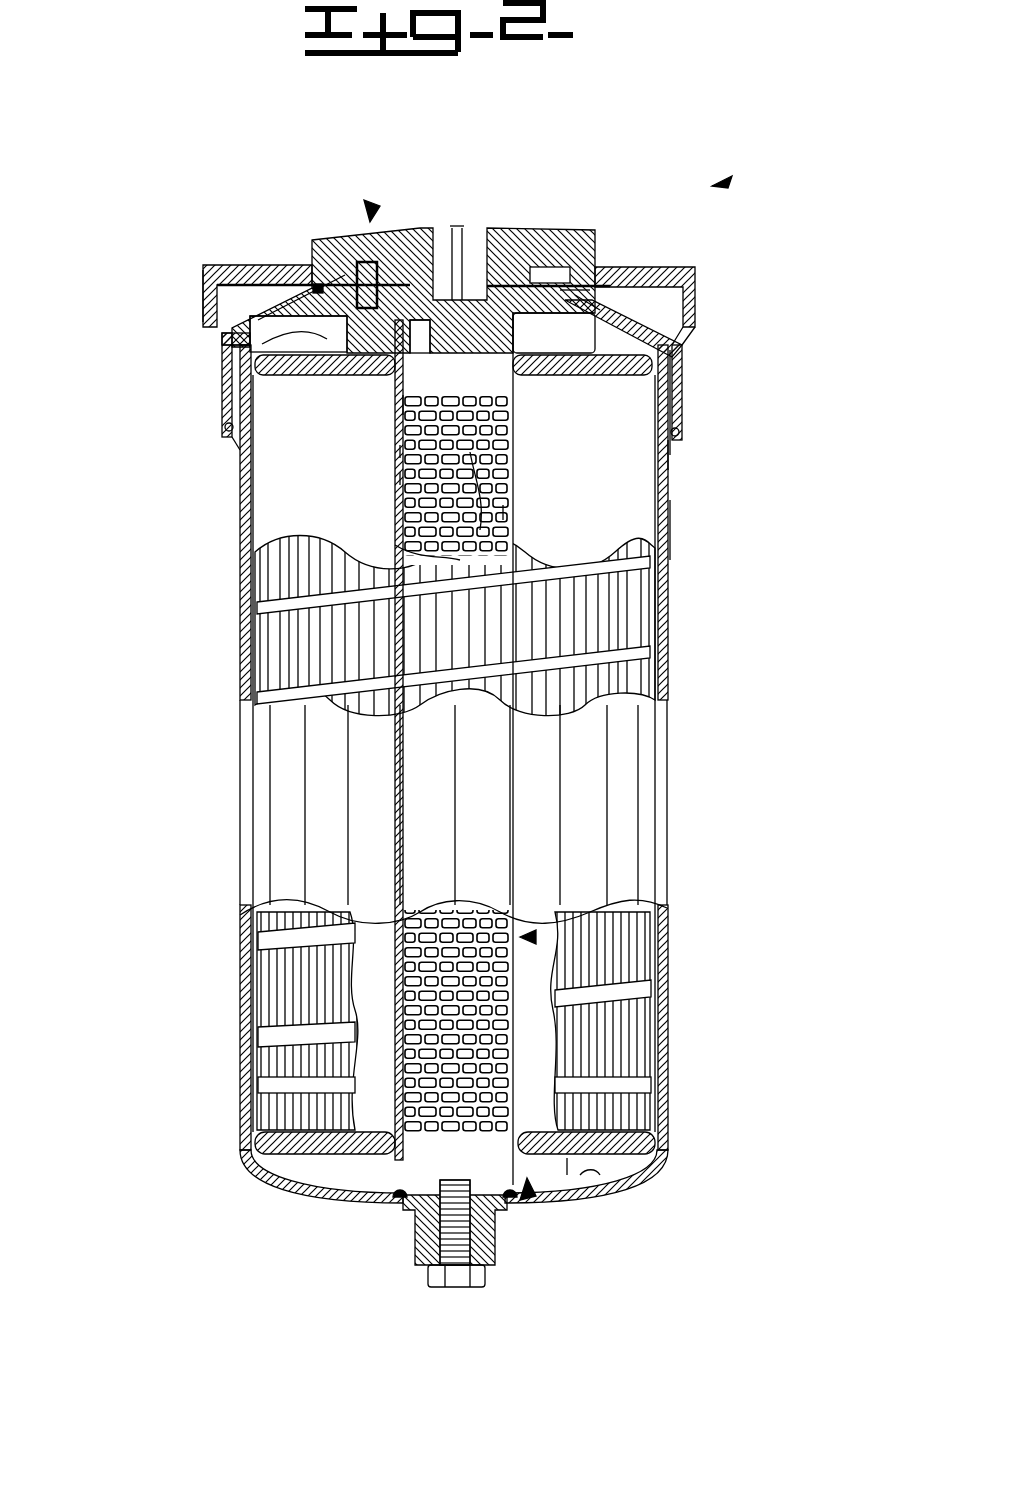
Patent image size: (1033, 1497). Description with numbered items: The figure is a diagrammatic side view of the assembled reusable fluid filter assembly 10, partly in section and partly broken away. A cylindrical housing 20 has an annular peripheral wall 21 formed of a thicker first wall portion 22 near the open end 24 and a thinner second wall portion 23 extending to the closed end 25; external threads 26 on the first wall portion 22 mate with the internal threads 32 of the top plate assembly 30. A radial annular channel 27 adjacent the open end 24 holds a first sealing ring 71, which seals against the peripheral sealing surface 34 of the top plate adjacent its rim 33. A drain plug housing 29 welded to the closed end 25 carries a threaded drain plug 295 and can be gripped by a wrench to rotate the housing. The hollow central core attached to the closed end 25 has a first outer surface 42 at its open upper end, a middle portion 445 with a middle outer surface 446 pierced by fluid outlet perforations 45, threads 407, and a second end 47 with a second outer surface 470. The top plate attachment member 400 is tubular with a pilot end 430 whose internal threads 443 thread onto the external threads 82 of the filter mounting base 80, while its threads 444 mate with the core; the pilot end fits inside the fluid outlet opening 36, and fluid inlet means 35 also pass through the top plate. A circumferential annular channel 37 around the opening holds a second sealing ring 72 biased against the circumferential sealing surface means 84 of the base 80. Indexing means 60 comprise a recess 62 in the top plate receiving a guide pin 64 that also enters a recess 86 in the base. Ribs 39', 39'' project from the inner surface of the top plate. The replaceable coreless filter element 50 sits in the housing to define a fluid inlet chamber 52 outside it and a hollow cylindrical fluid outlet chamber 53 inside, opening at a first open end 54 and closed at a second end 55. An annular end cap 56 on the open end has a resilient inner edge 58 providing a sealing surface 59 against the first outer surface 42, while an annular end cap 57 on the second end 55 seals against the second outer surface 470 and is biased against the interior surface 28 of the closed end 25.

The reusable fluid filter assembly 10 is at (720, 182).
The cylindrical housing 20 is at (530, 845).
The annular peripheral wall 21 is at (670, 808).
The first wall portion 22 is at (668, 455).
The second wall portion 23 is at (667, 530).
The open end 24 is at (680, 337).
The closed end 25 is at (603, 1190).
The external threads 26 is at (677, 400).
The radial annular channel 27 is at (672, 447).
The interior surface 28 is at (590, 1182).
The drain plug housing 29 is at (497, 1242).
The top plate assembly 30 is at (228, 306).
The internal threads 32 is at (223, 397).
The rim 33 is at (232, 424).
The peripheral sealing surface 34 is at (240, 450).
The fluid inlet means 35 is at (572, 285).
The fluid outlet opening 36 is at (457, 235).
The circumferential annular channel 37 is at (617, 340).
The rib 39' is at (136, 358).
The rib 39'' is at (185, 358).
The first outer surface 42 is at (395, 548).
The fluid outlet perforations 45 is at (470, 452).
The second end 47 is at (533, 1195).
The replaceable coreless filter element 50 is at (567, 613).
The fluid inlet chamber 52 is at (652, 510).
The hollow cylindrical fluid outlet chamber 53 is at (503, 510).
The first open end 54 is at (610, 288).
The second end 55 is at (567, 1160).
The annular end cap 56 is at (237, 330).
The annular end cap 57 is at (343, 1157).
The resilient inner edge 58 is at (415, 380).
The sealing surface 59 is at (505, 390).
The indexing means 60 is at (375, 210).
The recess 62 is at (235, 293).
The guide pin 64 is at (345, 290).
The first sealing ring 71 is at (675, 432).
The second sealing ring 72 is at (590, 300).
The filter mounting base 80 is at (557, 237).
The external threads 82 is at (460, 297).
The circumferential sealing surface means 84 is at (330, 330).
The recess 86 is at (362, 268).
The threaded drain plug 295 is at (427, 1277).
The top plate attachment member 400 is at (502, 422).
The threads 407 is at (400, 450).
The pilot end 430 is at (432, 318).
The internal threads 443 is at (400, 478).
The threads 444 is at (405, 405).
The middle portion 445 is at (530, 940).
The middle outer surface 446 is at (517, 947).
The second outer surface 470 is at (650, 1103).